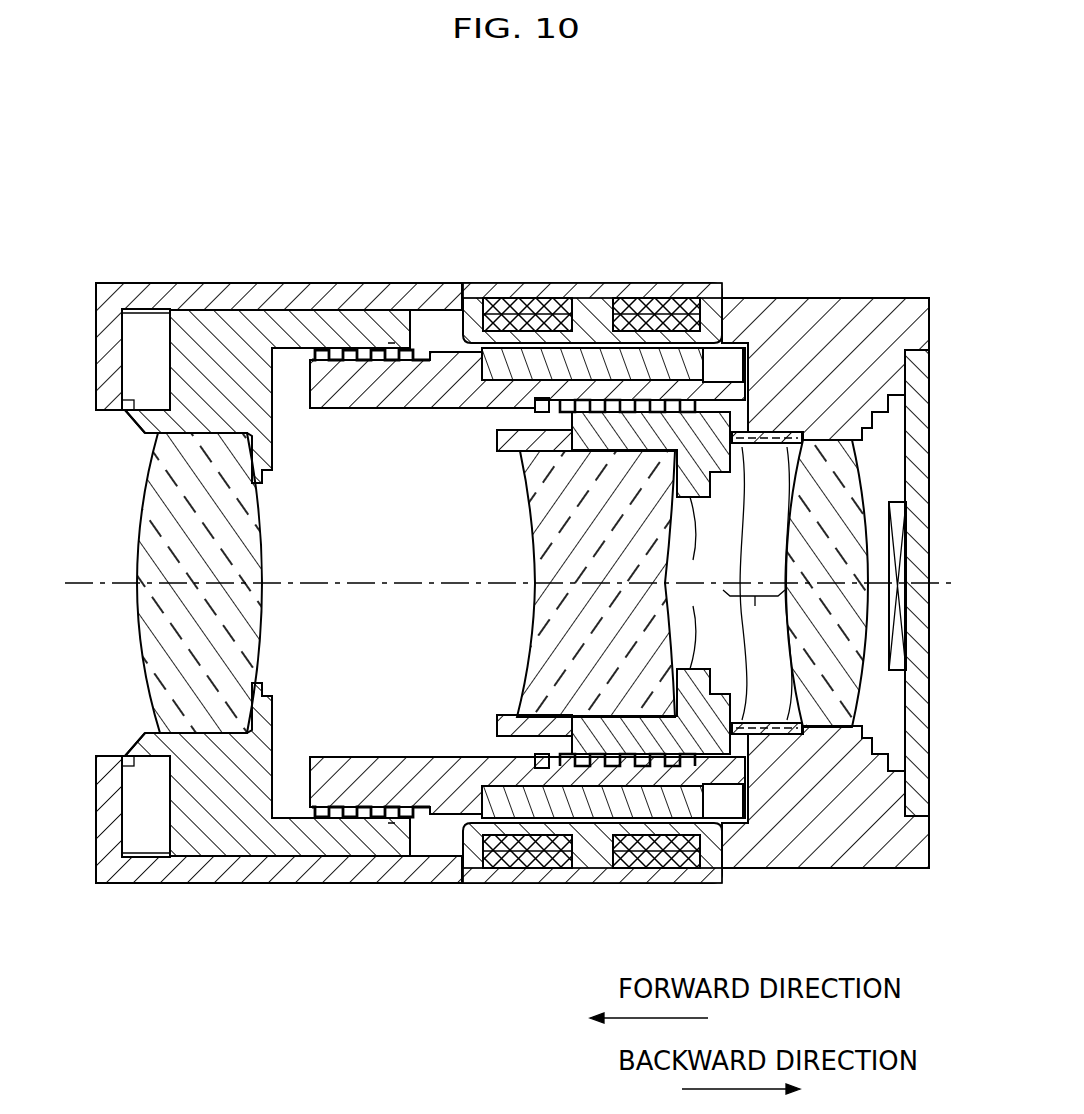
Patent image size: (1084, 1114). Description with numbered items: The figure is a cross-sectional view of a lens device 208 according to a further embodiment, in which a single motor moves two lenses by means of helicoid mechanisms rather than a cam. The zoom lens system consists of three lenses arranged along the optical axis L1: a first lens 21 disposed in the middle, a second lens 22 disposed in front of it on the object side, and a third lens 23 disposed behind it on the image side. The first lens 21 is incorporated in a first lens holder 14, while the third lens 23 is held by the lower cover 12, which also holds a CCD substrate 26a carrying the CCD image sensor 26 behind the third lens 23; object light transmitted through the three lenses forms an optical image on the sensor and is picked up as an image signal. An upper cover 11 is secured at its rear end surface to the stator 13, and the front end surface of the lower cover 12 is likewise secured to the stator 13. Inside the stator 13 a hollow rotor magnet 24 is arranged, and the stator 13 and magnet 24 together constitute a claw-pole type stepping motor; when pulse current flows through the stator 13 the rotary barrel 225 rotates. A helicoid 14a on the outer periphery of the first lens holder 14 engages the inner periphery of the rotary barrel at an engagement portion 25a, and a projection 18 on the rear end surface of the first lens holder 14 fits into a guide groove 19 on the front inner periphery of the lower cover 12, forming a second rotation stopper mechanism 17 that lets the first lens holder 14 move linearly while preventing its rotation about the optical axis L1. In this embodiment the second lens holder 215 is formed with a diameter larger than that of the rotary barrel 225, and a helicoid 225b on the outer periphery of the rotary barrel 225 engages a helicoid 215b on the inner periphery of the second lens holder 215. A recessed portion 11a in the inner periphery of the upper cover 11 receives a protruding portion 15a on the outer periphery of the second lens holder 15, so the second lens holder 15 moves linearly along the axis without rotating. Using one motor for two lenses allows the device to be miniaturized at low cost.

The lens device 208 is at (716, 208).
The upper cover 11 is at (250, 292).
The recessed portion 11a is at (437, 300).
The lower cover 12 is at (833, 298).
The stator 13 is at (598, 280).
The first lens holder 14 is at (690, 497).
The helicoid 14a is at (700, 478).
The second lens holder 15 is at (267, 583).
The protruding portion 15a is at (333, 318).
The second rotation stopper mechanism 17 is at (754, 614).
The projection 18 is at (742, 447).
The guide groove 19 is at (785, 447).
The first lens 21 is at (535, 605).
The second lens 22 is at (138, 620).
The third lens 23 is at (800, 652).
The magnet 24 is at (745, 862).
The engagement teeth 25a is at (540, 412).
The CCD image sensor 26 is at (880, 630).
The CCD substrate 26a is at (905, 440).
The second lens holder 215 is at (140, 430).
The helicoid 215b is at (388, 343).
The rotary barrel 225 is at (455, 412).
The helicoid 225b is at (328, 362).
The optical axis L1 is at (95, 583).